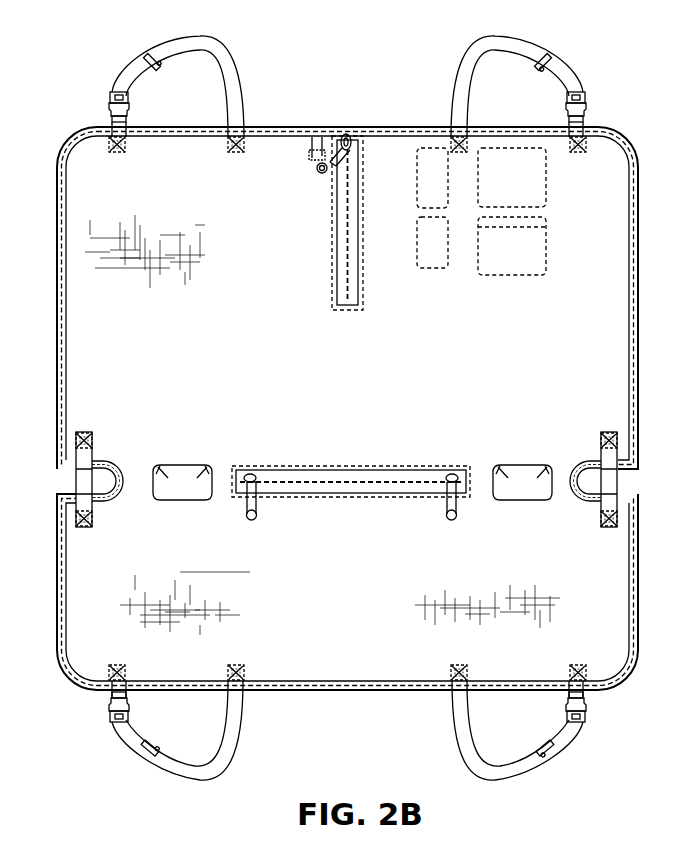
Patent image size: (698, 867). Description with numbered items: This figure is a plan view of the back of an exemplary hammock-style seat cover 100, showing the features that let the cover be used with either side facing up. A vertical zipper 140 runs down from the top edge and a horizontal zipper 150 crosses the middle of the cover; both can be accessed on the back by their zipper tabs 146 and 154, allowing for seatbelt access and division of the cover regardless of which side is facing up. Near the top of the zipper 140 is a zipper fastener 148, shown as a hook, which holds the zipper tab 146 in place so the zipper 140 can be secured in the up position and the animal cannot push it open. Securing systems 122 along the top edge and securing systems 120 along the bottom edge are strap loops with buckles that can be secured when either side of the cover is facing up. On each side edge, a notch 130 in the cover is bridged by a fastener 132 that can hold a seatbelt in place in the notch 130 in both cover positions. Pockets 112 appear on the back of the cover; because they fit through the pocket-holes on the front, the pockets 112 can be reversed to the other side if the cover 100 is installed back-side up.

The seat cover 100 is at (58, 692).
The pockets 112 is at (165, 488).
The securing system 120 is at (181, 768).
The securing system 122 is at (460, 72).
The notches 130 is at (112, 462).
The fasteners 132 is at (612, 488).
The zipper 140 is at (333, 268).
The zipper tab 146 is at (342, 155).
The zipper fastener 148 is at (320, 170).
The zipper 150 is at (334, 481).
The zipper tab 154 is at (447, 519).